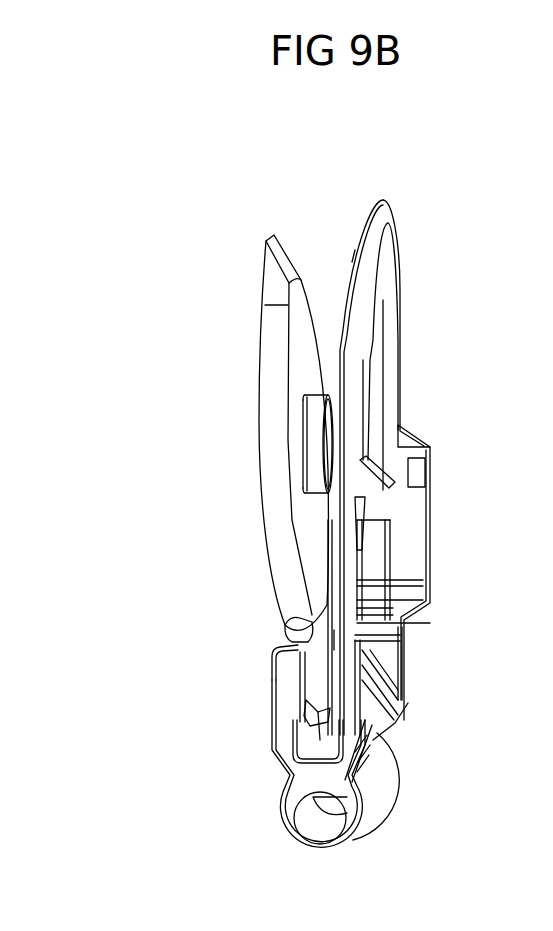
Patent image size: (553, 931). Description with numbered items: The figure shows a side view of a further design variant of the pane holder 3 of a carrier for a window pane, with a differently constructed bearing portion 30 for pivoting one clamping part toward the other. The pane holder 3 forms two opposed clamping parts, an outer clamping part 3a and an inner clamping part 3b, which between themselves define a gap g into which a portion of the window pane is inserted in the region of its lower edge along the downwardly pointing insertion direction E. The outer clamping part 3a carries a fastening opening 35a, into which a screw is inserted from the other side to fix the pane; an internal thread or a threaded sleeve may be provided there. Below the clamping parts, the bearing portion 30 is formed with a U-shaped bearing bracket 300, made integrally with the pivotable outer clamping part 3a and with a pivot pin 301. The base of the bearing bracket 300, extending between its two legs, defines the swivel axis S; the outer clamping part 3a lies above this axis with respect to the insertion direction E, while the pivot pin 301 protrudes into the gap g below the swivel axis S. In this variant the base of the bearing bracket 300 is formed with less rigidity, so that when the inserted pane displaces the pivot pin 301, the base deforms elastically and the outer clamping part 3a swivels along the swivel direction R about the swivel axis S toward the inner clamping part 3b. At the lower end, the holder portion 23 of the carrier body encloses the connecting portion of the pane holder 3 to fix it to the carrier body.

The pane holder 3 is at (444, 190).
The outer clamping part 3a is at (277, 265).
The inner clamping part 3b is at (391, 317).
The fastening opening 35a is at (330, 438).
The gap g is at (335, 645).
The insertion direction E is at (323, 243).
The swivel direction R is at (272, 617).
The swivel axis S is at (268, 667).
The bearing portion 30 is at (257, 757).
The bearing bracket 300 is at (280, 718).
The pivot pin 301 is at (317, 707).
The holder portion 23 is at (373, 785).